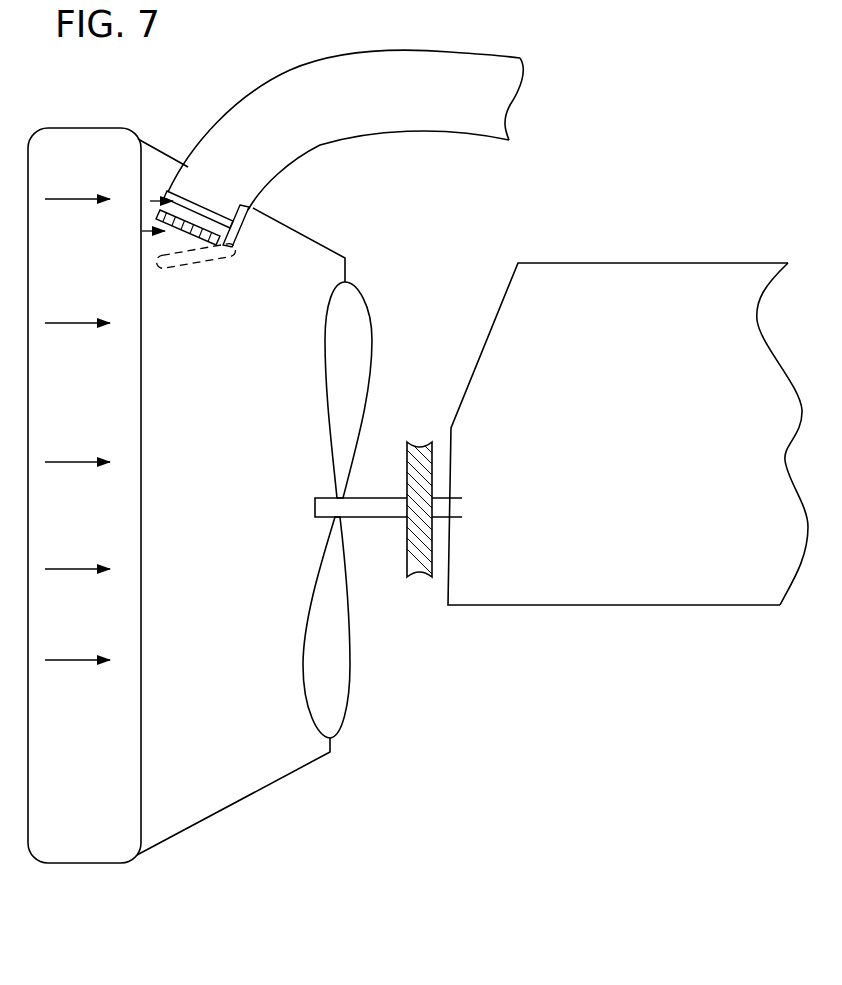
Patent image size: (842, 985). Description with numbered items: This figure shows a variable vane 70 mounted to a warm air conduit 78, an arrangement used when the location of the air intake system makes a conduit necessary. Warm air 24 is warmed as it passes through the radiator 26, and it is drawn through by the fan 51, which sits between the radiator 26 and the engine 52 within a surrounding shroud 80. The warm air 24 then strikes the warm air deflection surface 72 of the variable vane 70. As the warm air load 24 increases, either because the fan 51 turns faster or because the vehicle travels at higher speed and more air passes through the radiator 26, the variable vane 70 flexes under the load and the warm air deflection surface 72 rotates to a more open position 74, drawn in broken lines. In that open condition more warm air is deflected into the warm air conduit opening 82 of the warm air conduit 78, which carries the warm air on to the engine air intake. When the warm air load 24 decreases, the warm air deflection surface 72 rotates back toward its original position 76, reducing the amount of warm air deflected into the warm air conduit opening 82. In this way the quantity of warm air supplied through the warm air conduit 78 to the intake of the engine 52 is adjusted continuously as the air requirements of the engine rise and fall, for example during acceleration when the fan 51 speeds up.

The warm air 24 is at (160, 184).
The radiator 26 is at (87, 853).
The fan 51 is at (348, 707).
The engine 52 is at (668, 433).
The variable vane 70 is at (192, 215).
The warm air deflection surface 72 is at (243, 206).
The more open position 74 is at (190, 267).
The original position 76 is at (157, 213).
The warm air conduit 78 is at (412, 135).
The fan shroud 80 is at (312, 242).
The warm air conduit opening 82 is at (200, 207).